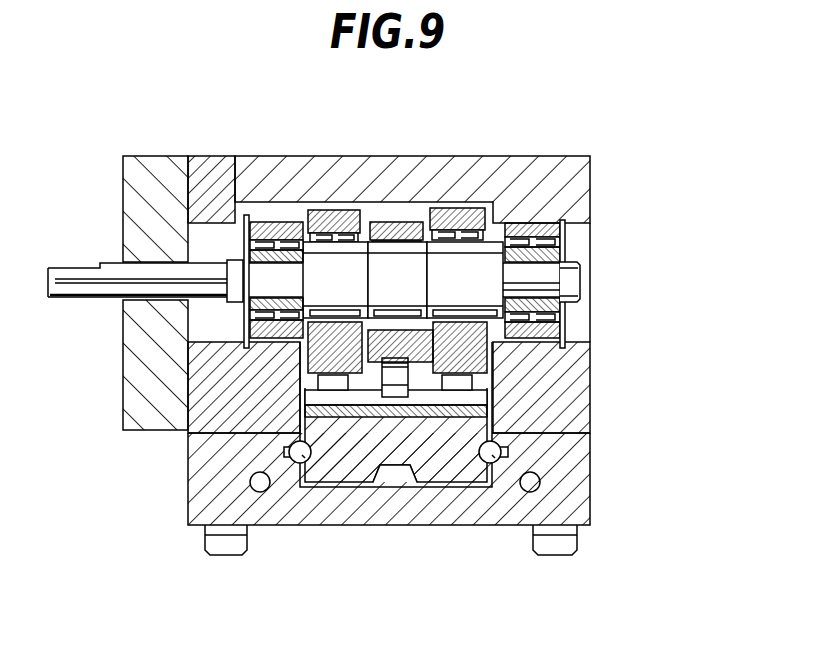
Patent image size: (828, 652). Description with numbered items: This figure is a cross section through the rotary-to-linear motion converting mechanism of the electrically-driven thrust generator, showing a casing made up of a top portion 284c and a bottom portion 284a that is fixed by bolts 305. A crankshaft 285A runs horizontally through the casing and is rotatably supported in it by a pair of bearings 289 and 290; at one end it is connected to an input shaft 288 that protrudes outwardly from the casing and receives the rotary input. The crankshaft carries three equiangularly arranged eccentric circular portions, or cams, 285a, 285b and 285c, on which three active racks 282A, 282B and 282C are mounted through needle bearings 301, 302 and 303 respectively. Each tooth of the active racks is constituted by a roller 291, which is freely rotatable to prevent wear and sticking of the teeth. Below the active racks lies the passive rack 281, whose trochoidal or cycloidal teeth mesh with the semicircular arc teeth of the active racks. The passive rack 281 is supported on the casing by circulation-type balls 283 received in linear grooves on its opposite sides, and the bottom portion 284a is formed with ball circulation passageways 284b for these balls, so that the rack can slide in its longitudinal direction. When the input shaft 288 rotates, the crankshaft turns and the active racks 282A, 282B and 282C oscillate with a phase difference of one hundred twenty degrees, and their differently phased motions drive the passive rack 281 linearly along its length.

The passive rack 281 is at (443, 470).
The active rack 282A is at (340, 218).
The active rack 282B is at (405, 228).
The active rack 282C is at (493, 206).
The balls 283 is at (303, 466).
The bottom portion of the casing 284a is at (345, 512).
The ball circulation passageways 284b is at (537, 486).
The top portion of the casing 284c is at (583, 158).
The eccentric circular portion 285a is at (320, 262).
The eccentric circular portion 285b is at (390, 273).
The eccentric circular portion 285c is at (450, 262).
The crankshaft 285A is at (572, 280).
The input shaft 288 is at (80, 275).
The bearing 289 is at (258, 245).
The bearing 290 is at (566, 228).
The roller 291 is at (397, 397).
The needle bearing 301 is at (268, 360).
The needle bearing 302 is at (495, 299).
The needle bearing 303 is at (445, 242).
The bolts 305 is at (222, 552).